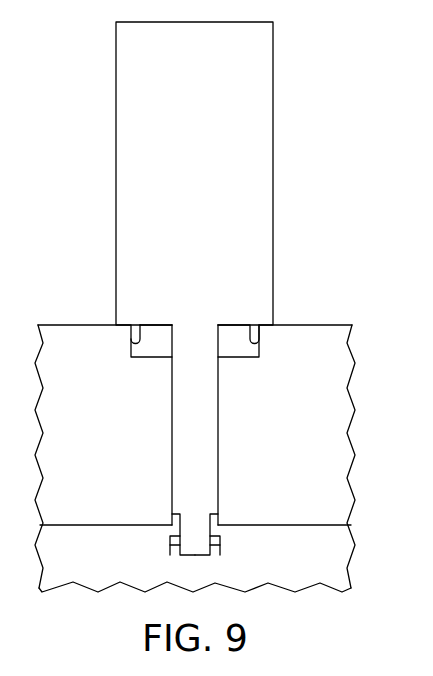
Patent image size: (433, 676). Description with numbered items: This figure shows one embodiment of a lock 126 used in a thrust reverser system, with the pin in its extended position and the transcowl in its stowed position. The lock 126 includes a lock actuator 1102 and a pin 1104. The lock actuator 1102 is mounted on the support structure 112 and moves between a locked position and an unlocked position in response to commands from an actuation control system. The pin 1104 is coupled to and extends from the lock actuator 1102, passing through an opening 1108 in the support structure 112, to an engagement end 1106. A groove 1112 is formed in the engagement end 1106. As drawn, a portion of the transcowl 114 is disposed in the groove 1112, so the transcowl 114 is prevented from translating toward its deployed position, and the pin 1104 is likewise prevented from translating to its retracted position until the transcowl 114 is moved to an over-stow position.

The lock 126 is at (93, 119).
The lock actuator 1102 is at (218, 135).
The support structure 112 is at (312, 365).
The transcowl 114 is at (333, 563).
The pin 1104 is at (170, 430).
The opening 1108 is at (220, 430).
The engagement end 1106 is at (187, 556).
The groove 1112 is at (215, 528).